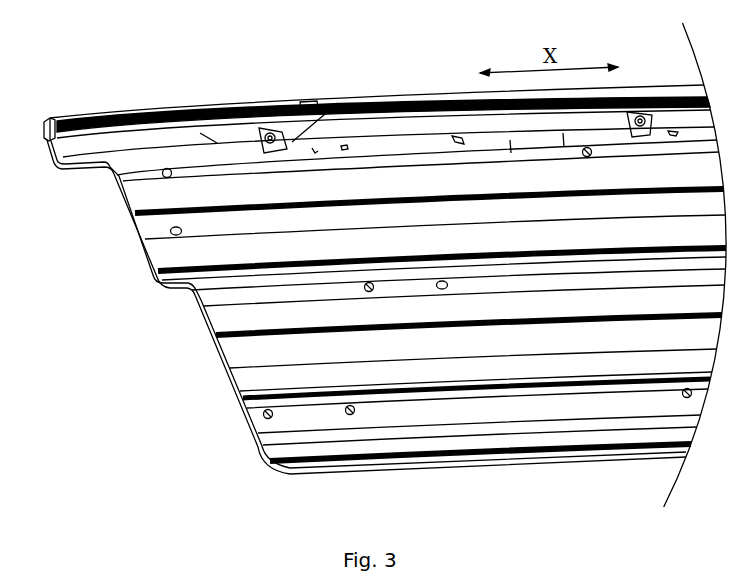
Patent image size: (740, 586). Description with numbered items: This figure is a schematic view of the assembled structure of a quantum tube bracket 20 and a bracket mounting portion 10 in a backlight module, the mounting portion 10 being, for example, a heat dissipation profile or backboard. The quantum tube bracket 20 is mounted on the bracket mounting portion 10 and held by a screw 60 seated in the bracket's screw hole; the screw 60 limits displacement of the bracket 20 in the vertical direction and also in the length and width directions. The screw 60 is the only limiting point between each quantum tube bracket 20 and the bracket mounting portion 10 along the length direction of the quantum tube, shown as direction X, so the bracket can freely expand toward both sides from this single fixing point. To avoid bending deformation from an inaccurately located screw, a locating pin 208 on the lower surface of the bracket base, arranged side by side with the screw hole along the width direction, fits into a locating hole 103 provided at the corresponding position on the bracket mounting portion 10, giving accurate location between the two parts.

The bracket mounting portion 10 is at (170, 262).
The quantum tube bracket 20 is at (160, 108).
The screw 60 is at (258, 127).
The locating pin 208 is at (288, 145).
The locating hole 103 is at (458, 140).